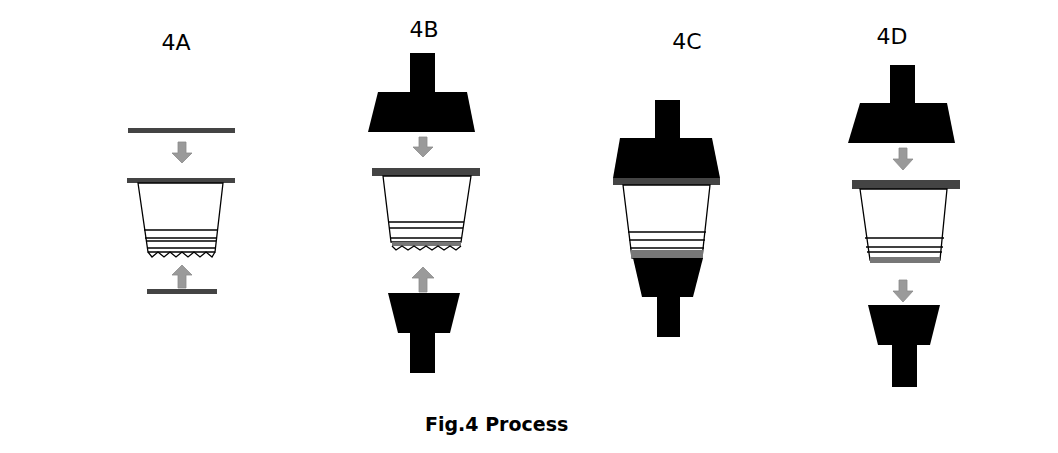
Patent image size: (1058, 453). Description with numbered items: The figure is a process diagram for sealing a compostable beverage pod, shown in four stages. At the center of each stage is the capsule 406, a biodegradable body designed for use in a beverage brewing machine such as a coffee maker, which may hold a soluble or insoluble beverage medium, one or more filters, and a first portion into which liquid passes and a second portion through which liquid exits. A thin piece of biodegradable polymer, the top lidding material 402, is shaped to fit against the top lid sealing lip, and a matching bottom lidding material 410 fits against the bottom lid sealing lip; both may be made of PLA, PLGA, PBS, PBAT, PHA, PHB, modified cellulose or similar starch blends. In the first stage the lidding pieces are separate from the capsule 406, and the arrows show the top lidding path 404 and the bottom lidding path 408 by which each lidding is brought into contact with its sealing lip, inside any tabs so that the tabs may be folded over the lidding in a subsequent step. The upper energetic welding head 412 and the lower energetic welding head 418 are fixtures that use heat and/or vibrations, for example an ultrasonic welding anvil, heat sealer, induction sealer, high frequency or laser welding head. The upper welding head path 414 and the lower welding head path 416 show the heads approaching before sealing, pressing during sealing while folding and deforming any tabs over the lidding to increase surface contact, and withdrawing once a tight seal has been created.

In FIG. 4A, the top lidding material 402 is at (130, 129).
In FIG. 4B, the top lidding material 402 is at (373, 170).
In FIG. 4C, the top lidding material 402 is at (617, 180).
In FIG. 4D, the top lidding material 402 is at (853, 183).
In FIG. 4A, the top lidding path 404 is at (168, 155).
In FIG. 4A, the capsule 406 is at (143, 208).
In FIG. 4B, the capsule 406 is at (387, 210).
In FIG. 4C, the capsule 406 is at (637, 205).
In FIG. 4D, the capsule 406 is at (867, 225).
In FIG. 4A, the bottom lidding path 408 is at (170, 277).
In FIG. 4A, the bottom lidding material 410 is at (148, 292).
In FIG. 4B, the bottom lidding material 410 is at (417, 245).
In FIG. 4C, the bottom lidding material 410 is at (638, 252).
In FIG. 4D, the bottom lidding material 410 is at (888, 258).
In FIG. 4B, the upper energetic welding head 412 is at (377, 100).
In FIG. 4C, the upper energetic welding head 412 is at (637, 138).
In FIG. 4D, the upper energetic welding head 412 is at (855, 117).
In FIG. 4B, the upper welding head path 414 is at (407, 147).
In FIG. 4D, the upper welding head path 414 is at (893, 165).
In FIG. 4B, the lower welding head path 416 is at (407, 282).
In FIG. 4D, the lower welding head path 416 is at (888, 288).
In FIG. 4B, the lower energetic welding head 418 is at (393, 312).
In FIG. 4C, the lower energetic welding head 418 is at (655, 305).
In FIG. 4D, the lower energetic welding head 418 is at (872, 325).